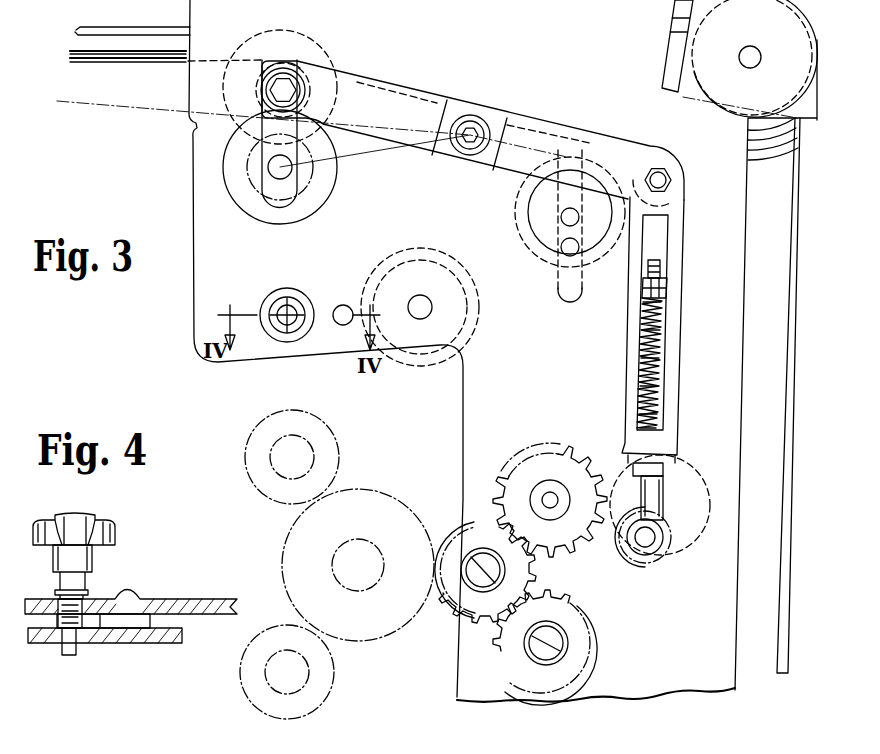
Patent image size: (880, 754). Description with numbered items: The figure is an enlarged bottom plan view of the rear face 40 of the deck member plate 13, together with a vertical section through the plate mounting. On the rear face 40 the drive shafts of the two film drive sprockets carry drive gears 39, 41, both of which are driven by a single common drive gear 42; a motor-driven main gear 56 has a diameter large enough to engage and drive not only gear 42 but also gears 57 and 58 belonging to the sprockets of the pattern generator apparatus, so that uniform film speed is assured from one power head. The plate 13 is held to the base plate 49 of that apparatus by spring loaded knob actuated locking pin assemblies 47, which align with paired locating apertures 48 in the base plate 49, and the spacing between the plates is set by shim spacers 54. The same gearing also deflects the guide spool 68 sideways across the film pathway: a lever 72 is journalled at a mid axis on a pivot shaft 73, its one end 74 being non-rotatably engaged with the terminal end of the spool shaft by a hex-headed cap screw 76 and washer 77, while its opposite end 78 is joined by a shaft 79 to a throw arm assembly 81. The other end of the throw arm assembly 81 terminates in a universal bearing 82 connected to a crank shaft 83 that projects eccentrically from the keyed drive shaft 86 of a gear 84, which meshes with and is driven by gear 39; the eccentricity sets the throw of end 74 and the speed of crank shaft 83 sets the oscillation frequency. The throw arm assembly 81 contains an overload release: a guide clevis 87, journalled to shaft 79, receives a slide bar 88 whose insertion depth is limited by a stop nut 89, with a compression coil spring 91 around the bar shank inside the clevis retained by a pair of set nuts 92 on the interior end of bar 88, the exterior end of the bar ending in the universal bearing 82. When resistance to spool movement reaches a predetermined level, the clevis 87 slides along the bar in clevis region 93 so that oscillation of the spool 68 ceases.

In FIG. 3, the plate 13 is at (735, 680).
In FIG. 4, the plate 13 is at (205, 603).
In FIG. 3, the drive gear 39 is at (558, 452).
In FIG. 3, the rear face 40 is at (557, 353).
In FIG. 3, the drive gear 41 is at (586, 651).
In FIG. 3, the common drive gear 42 is at (480, 518).
In FIG. 4, the spring loaded knob actuated locking pin assembly 47 is at (115, 530).
In FIG. 4, the locating aperture 48 is at (58, 646).
In FIG. 4, the base plate 49 is at (148, 644).
In FIG. 4, the shim spacer 54 is at (143, 620).
In FIG. 3, the main gear 56 is at (392, 500).
In FIG. 3, the gear 57 is at (332, 683).
In FIG. 3, the gear 58 is at (337, 456).
In FIG. 3, the guide spool 68 is at (300, 36).
In FIG. 3, the lever 72 is at (428, 93).
In FIG. 3, the pivot shaft 73 is at (480, 122).
In FIG. 3, the end of lever 74 is at (300, 70).
In FIG. 3, the hex-headed cap screw 76 is at (262, 72).
In FIG. 3, the washer 77 is at (262, 110).
In FIG. 3, the opposite end of lever 78 is at (600, 140).
In FIG. 3, the shaft 79 is at (666, 178).
In FIG. 3, the throw arm assembly 81 is at (691, 361).
In FIG. 3, the universal bearing 82 is at (670, 545).
In FIG. 3, the crank shaft 83 is at (645, 547).
In FIG. 3, the gear 84 is at (618, 540).
In FIG. 3, the keyed drive shaft 86 is at (668, 497).
In FIG. 3, the guide clevis 87 is at (683, 284).
In FIG. 3, the slide bar 88 is at (662, 320).
In FIG. 3, the stop nut 89 is at (628, 462).
In FIG. 3, the compression coil spring 91 is at (660, 412).
In FIG. 3, the set nuts 92 is at (660, 284).
In FIG. 3, the clevis region 93 is at (680, 444).